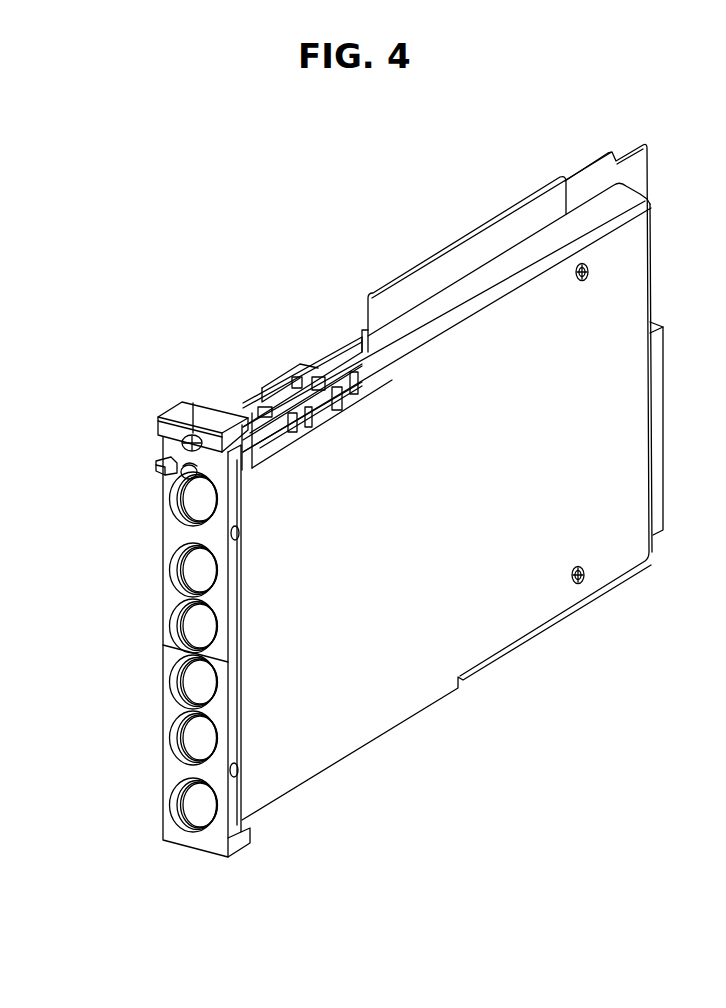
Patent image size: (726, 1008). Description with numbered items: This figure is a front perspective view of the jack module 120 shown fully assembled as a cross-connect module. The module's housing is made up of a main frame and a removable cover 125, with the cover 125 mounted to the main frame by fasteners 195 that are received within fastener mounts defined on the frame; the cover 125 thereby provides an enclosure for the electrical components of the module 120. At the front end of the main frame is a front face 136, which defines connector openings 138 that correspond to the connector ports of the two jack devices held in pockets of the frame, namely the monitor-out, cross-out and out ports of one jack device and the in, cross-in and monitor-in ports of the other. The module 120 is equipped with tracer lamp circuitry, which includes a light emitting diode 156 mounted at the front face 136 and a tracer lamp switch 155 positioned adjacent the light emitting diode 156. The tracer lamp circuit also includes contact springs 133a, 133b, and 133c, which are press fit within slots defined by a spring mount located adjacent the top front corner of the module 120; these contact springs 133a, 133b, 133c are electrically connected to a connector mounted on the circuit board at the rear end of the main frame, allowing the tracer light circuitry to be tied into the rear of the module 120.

The jack module 120 is at (279, 338).
The cover 125 is at (503, 610).
The contact spring 133a is at (362, 382).
The contact spring 133b is at (363, 365).
The contact spring 133c is at (345, 352).
The front face 136 is at (217, 605).
The connector openings 138 is at (180, 630).
The tracer lamp switch 155 is at (158, 462).
The light emitting diode 156 is at (195, 475).
The fasteners 195 is at (590, 272).